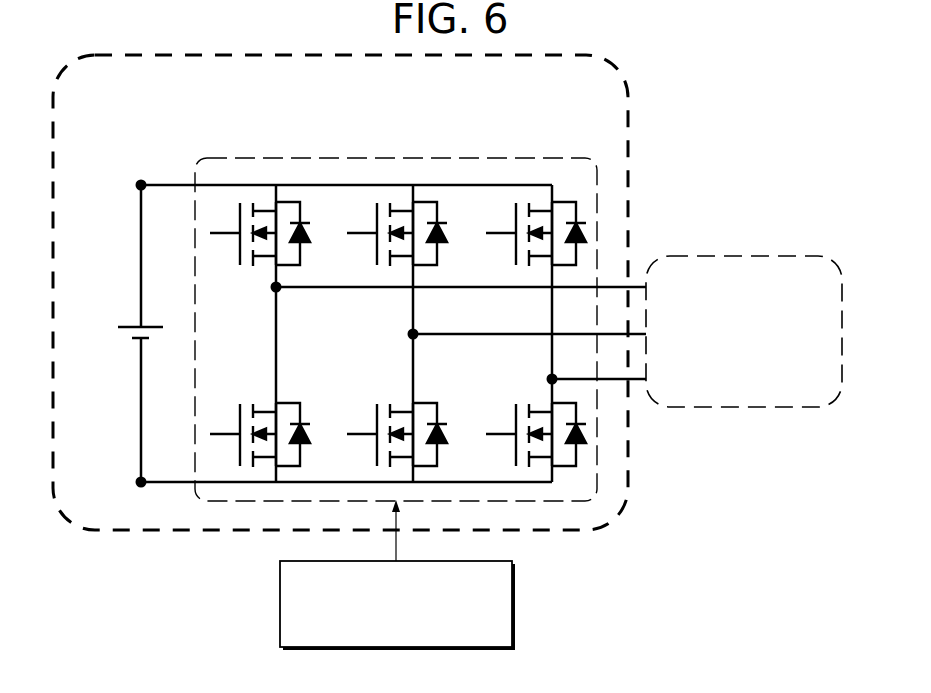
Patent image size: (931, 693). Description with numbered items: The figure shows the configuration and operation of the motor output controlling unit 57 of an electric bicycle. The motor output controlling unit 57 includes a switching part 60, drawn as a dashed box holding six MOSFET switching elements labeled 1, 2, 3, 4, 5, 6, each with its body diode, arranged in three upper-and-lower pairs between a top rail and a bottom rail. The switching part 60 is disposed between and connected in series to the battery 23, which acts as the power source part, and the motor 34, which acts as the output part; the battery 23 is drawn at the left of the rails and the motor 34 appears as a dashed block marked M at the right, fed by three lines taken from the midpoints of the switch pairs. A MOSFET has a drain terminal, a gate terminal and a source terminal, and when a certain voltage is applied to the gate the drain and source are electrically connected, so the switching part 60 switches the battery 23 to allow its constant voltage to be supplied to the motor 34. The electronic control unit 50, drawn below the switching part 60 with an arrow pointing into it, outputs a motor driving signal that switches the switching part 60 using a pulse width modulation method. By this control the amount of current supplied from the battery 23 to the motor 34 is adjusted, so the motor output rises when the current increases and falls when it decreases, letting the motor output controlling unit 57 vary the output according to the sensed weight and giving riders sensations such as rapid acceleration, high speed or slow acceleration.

The switching element 1 is at (260, 226).
The switching element 2 is at (260, 427).
The switching element 3 is at (397, 226).
The switching element 4 is at (397, 427).
The switching element 5 is at (536, 226).
The switching element 6 is at (536, 427).
The battery 23 is at (124, 322).
The motor 34 is at (768, 256).
The electronic control unit 50 is at (517, 600).
The motor output controlling unit 57 is at (629, 486).
The switching part 60 is at (409, 152).